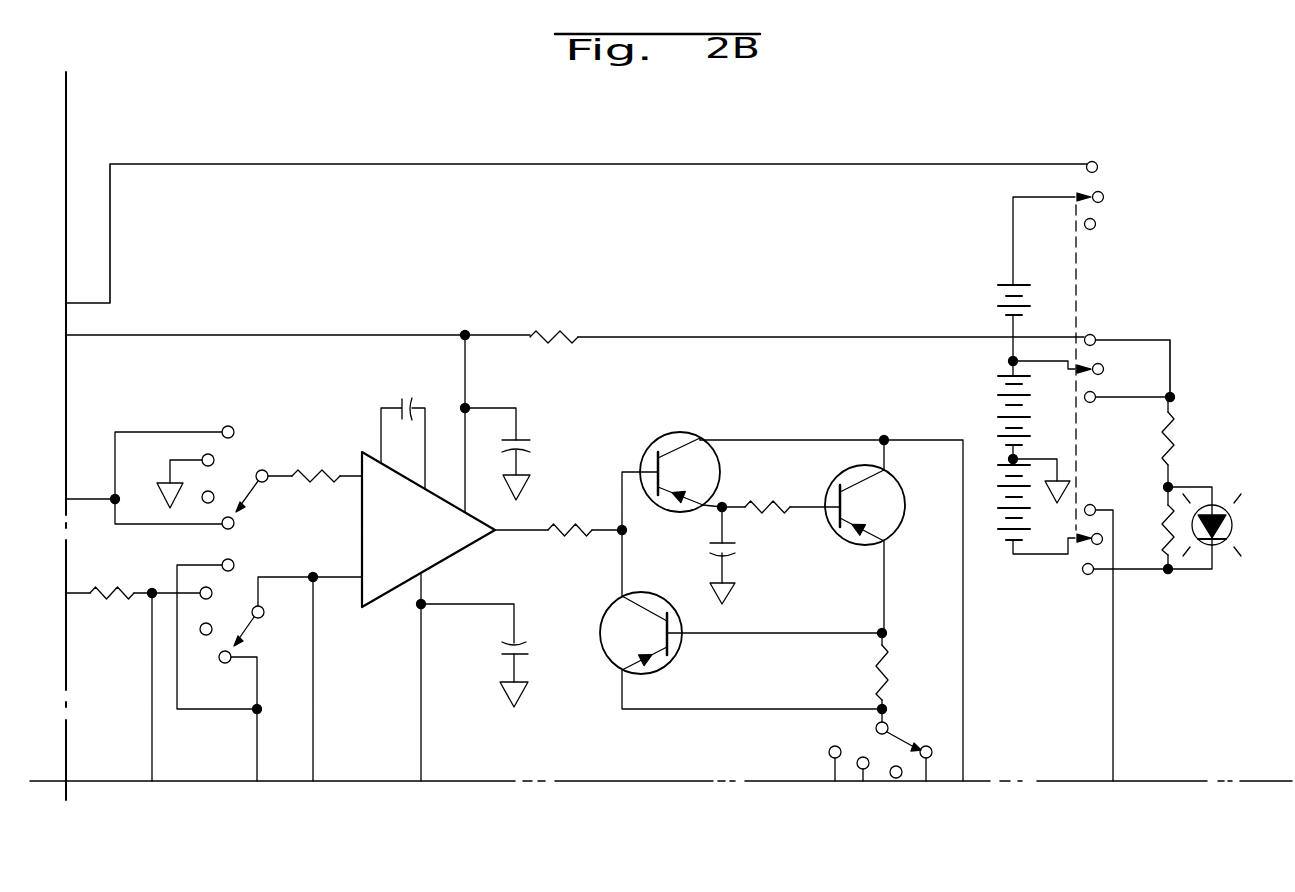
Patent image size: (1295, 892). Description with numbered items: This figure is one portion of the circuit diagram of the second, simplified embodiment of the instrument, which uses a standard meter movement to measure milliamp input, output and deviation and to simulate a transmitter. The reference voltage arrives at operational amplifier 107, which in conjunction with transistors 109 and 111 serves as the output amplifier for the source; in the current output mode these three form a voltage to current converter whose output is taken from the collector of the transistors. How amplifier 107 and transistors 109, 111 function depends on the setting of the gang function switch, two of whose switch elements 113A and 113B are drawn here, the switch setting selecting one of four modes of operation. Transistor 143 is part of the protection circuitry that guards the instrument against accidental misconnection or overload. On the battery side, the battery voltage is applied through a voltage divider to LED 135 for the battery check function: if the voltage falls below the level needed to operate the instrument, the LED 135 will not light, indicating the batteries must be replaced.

The operational amplifier 107 is at (455, 553).
The transistor 109 is at (681, 432).
The transistor 111 is at (904, 498).
The switch element 113A is at (238, 468).
The switch element 113B is at (236, 590).
The LED 135 is at (1233, 521).
The transistor 143 is at (670, 663).